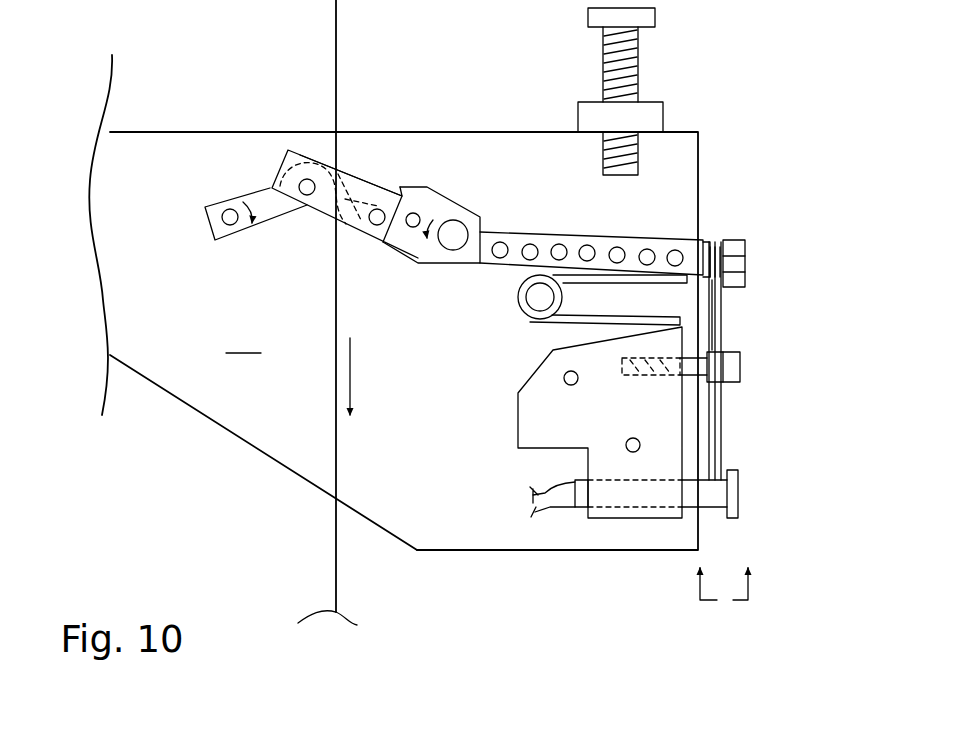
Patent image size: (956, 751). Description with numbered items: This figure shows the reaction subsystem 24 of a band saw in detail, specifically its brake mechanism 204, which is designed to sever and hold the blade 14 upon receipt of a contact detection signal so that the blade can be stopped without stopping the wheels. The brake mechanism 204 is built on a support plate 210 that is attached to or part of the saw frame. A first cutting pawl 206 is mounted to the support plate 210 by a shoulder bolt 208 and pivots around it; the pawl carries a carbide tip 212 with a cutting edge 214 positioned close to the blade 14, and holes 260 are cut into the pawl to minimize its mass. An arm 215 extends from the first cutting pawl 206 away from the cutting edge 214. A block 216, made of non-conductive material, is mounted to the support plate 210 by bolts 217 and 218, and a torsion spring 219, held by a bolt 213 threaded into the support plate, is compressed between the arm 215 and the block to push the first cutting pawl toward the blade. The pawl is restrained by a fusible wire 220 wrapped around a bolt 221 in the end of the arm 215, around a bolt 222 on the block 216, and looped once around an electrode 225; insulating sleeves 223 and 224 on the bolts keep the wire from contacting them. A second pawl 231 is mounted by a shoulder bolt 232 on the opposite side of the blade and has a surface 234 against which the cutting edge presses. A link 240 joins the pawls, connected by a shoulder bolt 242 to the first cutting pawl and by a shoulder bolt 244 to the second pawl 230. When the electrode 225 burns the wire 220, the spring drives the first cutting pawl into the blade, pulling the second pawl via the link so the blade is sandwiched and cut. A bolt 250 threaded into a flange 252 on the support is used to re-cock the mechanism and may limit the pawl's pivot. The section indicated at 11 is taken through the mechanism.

The support plate 210 is at (393, 302).
The brake mechanism 204 is at (430, 519).
The blade 14 is at (336, 527).
The reaction subsystem 24 is at (192, 480).
The bolt 250 is at (638, 43).
The flange 252 is at (653, 115).
The carbide tip 212 is at (390, 185).
The cutting edge 214 is at (340, 172).
The link 240 is at (299, 167).
The shoulder bolt 242 is at (375, 226).
The shoulder bolt 244 is at (278, 173).
The surface 234 is at (333, 190).
The second pawl 231 is at (257, 197).
The shoulder bolt 232 is at (223, 215).
The first cutting pawl 206 is at (417, 193).
The shoulder bolt 208 is at (453, 235).
The holes 260 is at (587, 248).
The arm 215 is at (633, 235).
The insulating sleeve 223 is at (707, 240).
The bolt 221 is at (743, 240).
The fusible wire 220 is at (720, 427).
The insulating sleeve 224 is at (708, 355).
The bolt 222 is at (733, 368).
The electrode 225 is at (733, 488).
The second pawl 230 is at (557, 508).
The torsion spring 219 is at (520, 305).
The bolt 213 is at (542, 303).
The block 216 is at (525, 413).
The bolt 217 is at (572, 385).
The bolt 218 is at (633, 438).
The section line 11- 11 is at (729, 600).